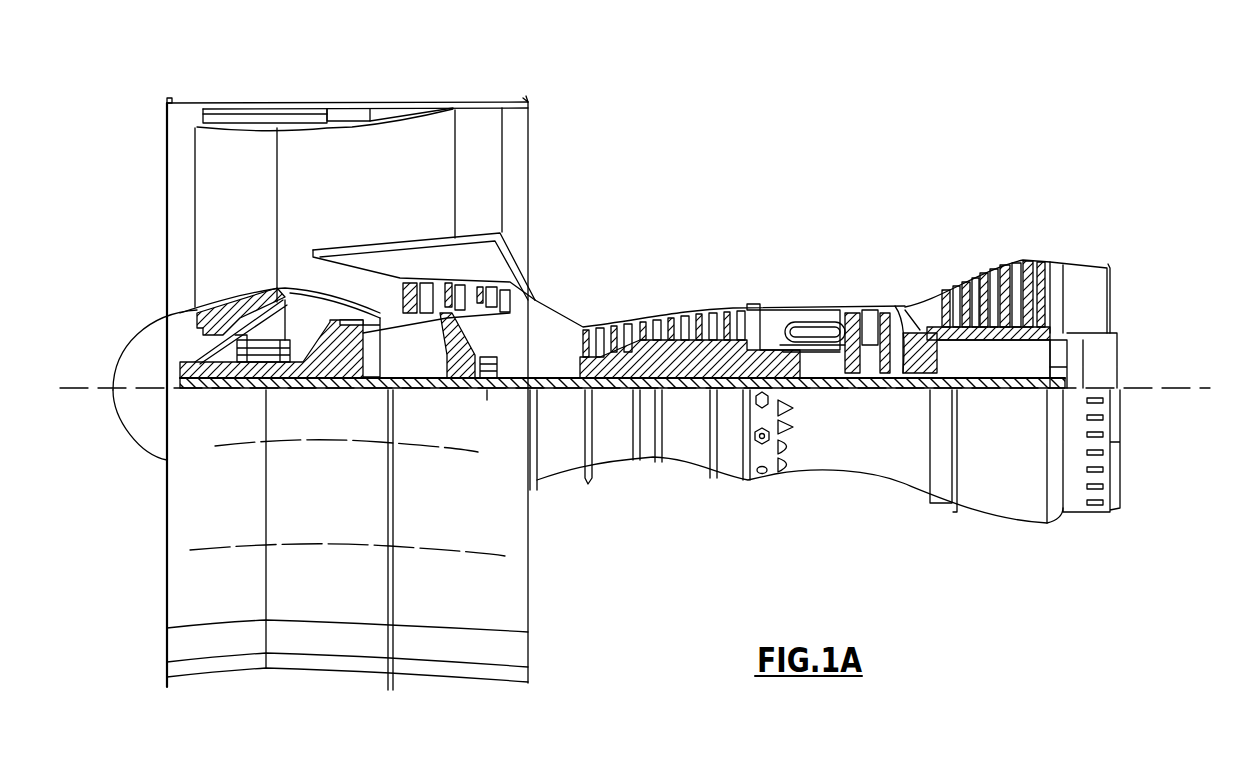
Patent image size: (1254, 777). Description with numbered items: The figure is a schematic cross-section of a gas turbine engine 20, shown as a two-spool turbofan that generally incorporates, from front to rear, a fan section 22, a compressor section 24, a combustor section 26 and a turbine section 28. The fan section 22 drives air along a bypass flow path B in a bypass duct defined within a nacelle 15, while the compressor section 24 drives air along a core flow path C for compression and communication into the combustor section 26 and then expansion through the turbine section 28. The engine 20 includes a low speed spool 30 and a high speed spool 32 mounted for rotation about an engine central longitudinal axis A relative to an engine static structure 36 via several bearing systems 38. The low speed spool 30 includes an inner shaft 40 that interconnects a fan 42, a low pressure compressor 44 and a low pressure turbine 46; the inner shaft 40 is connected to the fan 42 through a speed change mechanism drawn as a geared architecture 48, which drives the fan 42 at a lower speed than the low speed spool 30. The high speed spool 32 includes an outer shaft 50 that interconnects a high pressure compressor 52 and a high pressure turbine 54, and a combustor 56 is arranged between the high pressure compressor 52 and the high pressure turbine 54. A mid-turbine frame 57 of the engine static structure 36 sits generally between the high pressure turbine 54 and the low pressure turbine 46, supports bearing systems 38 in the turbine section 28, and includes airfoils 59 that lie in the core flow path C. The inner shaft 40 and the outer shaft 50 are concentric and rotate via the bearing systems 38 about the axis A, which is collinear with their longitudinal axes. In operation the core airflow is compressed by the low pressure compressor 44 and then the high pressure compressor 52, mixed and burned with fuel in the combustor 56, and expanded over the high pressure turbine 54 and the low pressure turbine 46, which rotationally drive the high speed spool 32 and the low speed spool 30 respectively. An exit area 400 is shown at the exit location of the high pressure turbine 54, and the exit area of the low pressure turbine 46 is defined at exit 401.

The nacelle 15 is at (348, 108).
The gas turbine engine 20 is at (812, 150).
The fan section 22 is at (283, 92).
The compressor section 24 is at (590, 287).
The combustor section 26 is at (805, 278).
The turbine section 28 is at (957, 232).
The low speed spool 30 is at (685, 400).
The high speed spool 32 is at (735, 355).
The engine static structure 36 is at (727, 486).
The bearing systems 38 is at (487, 380).
The inner shaft 40 is at (548, 390).
The fan 42 is at (252, 235).
The low pressure compressor 44 is at (445, 298).
The low pressure turbine 46 is at (995, 285).
The geared architecture 48 is at (345, 380).
The outer shaft 50 is at (812, 380).
The high pressure compressor 52 is at (660, 357).
The high pressure turbine 54 is at (880, 390).
The combustor 56 is at (800, 328).
The mid-turbine frame 57 is at (915, 295).
The airfoils 59 is at (940, 355).
The exit area 400 is at (905, 300).
The exit 401 is at (1052, 262).
The engine central longitudinal axis A is at (1205, 388).
The bypass flow path B is at (305, 178).
The core flow path C is at (348, 281).